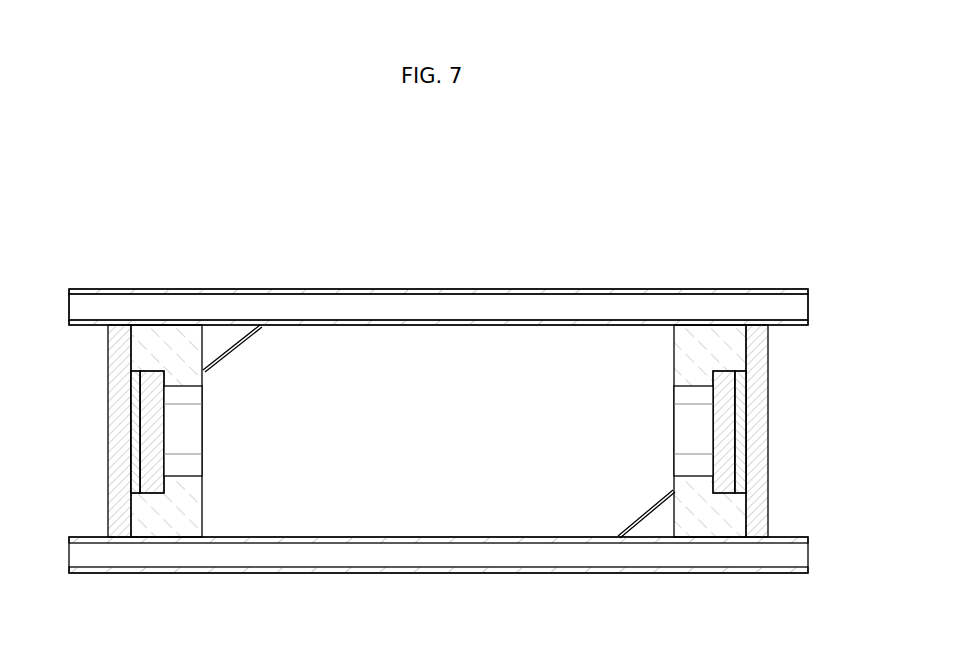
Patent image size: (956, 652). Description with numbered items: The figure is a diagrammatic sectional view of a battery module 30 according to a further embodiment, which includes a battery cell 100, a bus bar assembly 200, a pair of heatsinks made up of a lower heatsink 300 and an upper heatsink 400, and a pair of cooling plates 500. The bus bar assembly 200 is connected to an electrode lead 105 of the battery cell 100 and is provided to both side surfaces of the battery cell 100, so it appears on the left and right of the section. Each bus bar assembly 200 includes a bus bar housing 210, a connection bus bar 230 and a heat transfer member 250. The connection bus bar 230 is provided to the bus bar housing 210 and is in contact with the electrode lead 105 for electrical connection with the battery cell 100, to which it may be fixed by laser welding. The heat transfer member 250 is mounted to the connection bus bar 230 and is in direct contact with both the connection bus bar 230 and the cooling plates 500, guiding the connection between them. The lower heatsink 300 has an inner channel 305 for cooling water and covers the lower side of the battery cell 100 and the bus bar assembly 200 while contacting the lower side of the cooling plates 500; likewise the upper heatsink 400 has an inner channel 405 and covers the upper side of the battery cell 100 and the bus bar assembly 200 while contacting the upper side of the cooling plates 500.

The battery module 30 is at (92, 197).
The battery cell 100 is at (569, 355).
The electrode lead 105 is at (188, 390).
The bus bar assembly 200 is at (172, 315).
The bus bar housing 210 is at (726, 346).
The connection bus bar 230 is at (727, 437).
The heat transfer member 250 is at (740, 408).
The lower heatsink 300 is at (405, 573).
The inner channel 305 is at (484, 555).
The upper heatsink 400 is at (405, 289).
The inner channel 405 is at (485, 307).
The cooling plate 500 is at (108, 352).